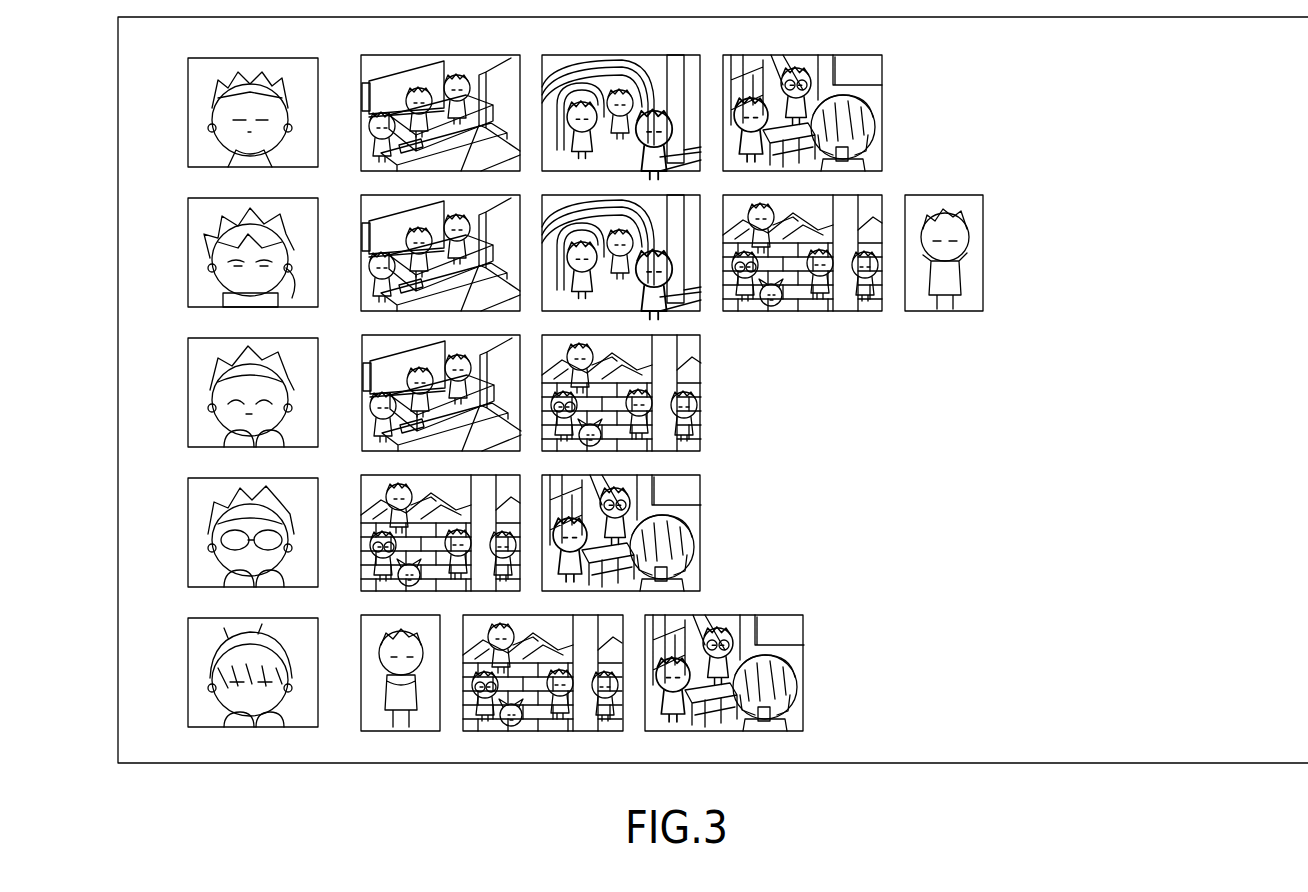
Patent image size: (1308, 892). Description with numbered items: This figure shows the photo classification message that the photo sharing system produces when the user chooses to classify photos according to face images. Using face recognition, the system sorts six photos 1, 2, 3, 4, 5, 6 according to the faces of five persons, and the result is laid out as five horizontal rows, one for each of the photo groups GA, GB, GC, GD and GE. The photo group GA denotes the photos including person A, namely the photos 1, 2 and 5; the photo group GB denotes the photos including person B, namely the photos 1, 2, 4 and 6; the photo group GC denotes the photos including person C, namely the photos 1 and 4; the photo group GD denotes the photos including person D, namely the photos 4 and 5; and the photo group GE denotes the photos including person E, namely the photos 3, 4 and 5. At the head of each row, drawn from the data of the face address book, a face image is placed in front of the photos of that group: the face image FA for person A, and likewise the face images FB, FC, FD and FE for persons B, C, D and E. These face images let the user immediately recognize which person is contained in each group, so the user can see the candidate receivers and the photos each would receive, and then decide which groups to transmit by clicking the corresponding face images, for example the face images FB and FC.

The photo 1 is at (456, 66).
The photo 2 is at (650, 67).
The photo 3 is at (372, 690).
The photo 4 is at (866, 207).
The photo 5 is at (815, 66).
The photo 6 is at (974, 280).
The face image of person A FA is at (200, 100).
The face image of person B FB is at (200, 240).
The face image of person C FC is at (200, 380).
The face image of person D FD is at (200, 520).
The face image of person E FE is at (200, 660).
The photo group GA is at (182, 122).
The photo group GB is at (182, 262).
The photo group GC is at (182, 402).
The photo group GD is at (182, 542).
The photo group GE is at (182, 682).